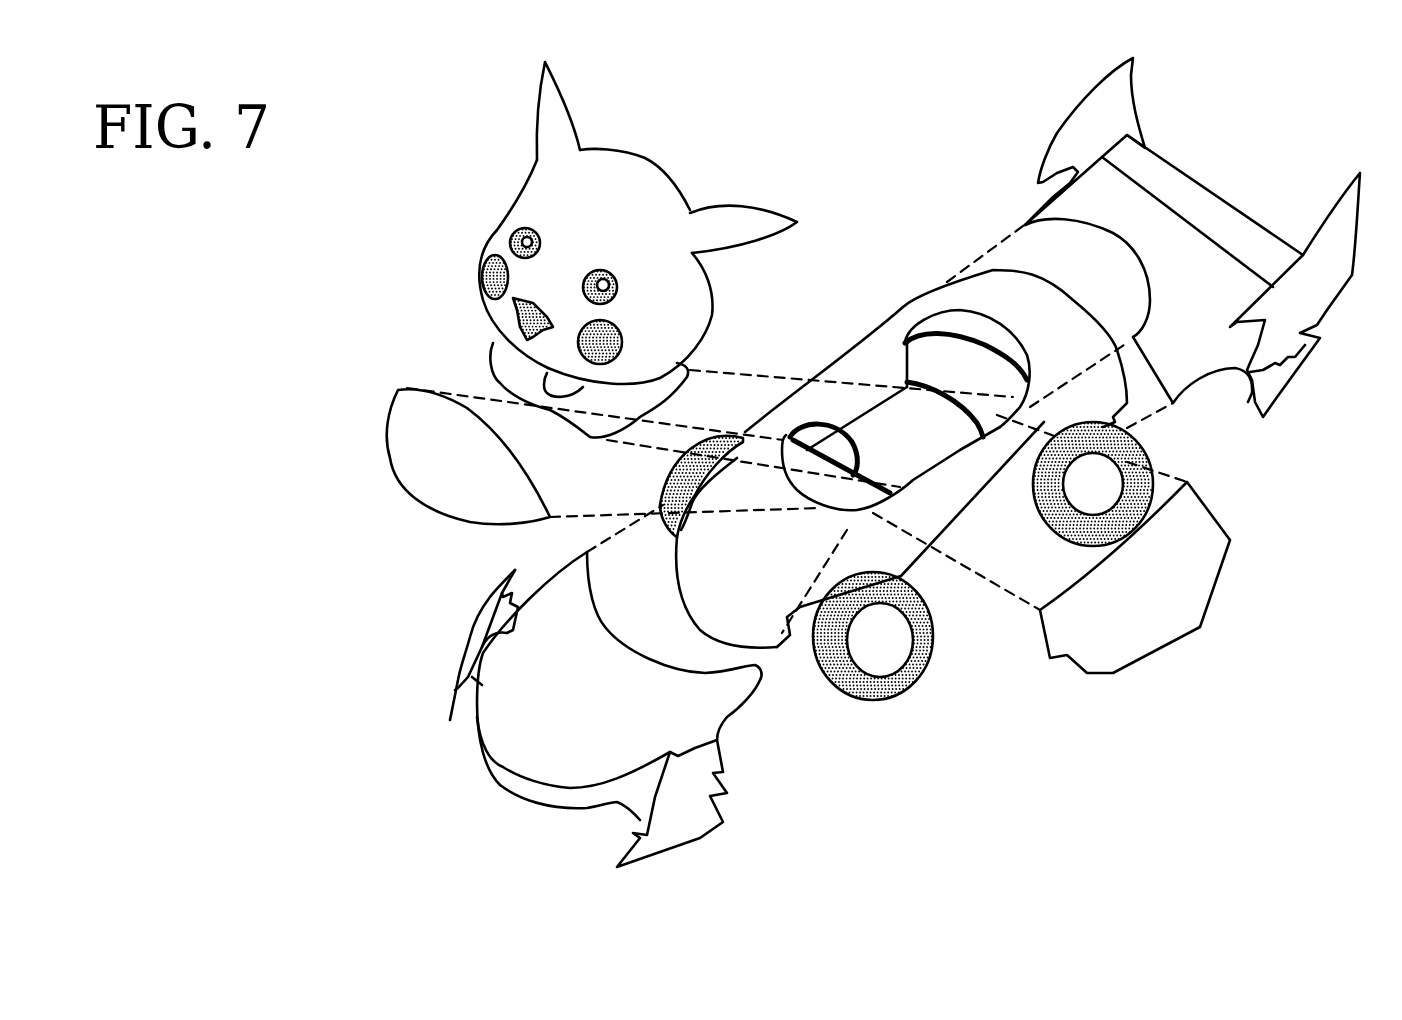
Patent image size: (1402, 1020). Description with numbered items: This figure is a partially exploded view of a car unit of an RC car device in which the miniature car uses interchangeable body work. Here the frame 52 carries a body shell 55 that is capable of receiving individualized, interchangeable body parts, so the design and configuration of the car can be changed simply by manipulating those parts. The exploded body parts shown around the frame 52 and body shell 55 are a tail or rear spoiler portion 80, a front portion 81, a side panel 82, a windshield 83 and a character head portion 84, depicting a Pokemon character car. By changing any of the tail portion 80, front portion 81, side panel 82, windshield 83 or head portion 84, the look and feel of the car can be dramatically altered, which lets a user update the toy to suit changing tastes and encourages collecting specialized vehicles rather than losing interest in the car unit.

The frame 52 is at (943, 517).
The body shell 55 is at (862, 400).
The tail or rear spoiler portion 80 is at (1188, 200).
The front portion 81 is at (513, 778).
The side panel 82 is at (1143, 607).
The windshield 83 is at (437, 460).
The character head portion 84 is at (627, 223).